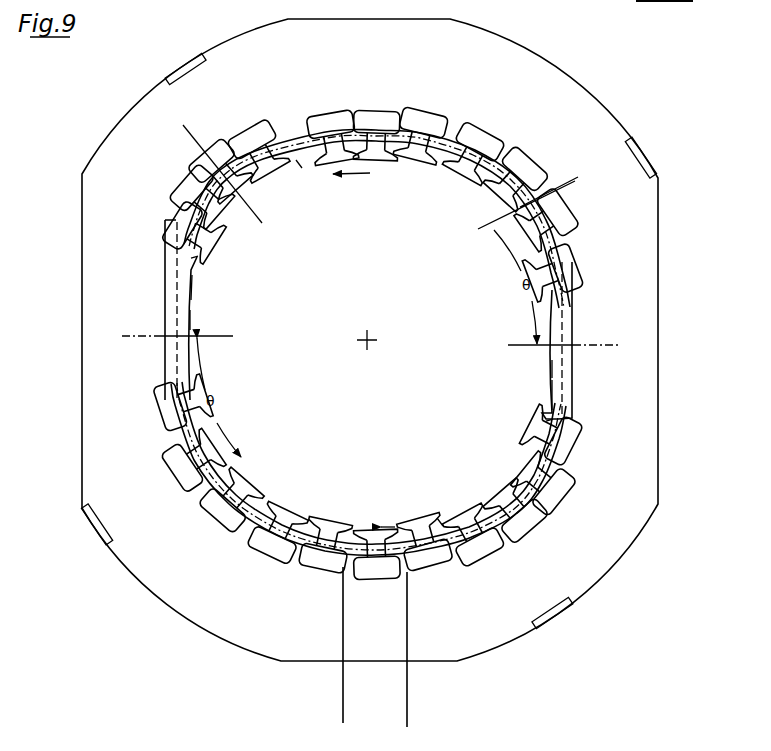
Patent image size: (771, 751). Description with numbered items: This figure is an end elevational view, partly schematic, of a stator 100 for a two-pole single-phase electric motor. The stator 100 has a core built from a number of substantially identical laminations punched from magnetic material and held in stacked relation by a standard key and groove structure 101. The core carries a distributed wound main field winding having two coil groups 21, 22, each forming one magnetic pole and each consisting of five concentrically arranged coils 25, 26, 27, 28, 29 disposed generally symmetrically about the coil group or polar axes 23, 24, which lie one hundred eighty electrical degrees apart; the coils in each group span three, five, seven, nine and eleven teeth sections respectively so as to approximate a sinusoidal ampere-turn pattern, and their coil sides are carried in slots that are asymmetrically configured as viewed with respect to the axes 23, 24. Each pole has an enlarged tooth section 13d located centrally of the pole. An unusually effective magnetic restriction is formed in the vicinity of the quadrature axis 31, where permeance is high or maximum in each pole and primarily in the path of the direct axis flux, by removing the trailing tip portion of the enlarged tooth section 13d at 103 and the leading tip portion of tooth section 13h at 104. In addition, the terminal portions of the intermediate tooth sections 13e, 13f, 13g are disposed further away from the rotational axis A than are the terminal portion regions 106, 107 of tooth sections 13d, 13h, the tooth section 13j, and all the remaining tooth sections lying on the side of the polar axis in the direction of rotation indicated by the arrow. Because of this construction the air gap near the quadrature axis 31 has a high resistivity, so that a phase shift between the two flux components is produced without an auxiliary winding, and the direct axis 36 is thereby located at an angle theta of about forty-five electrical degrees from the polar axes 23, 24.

The stator 100 is at (171, 613).
The key and groove structure 101 is at (179, 64).
The coil group 21 is at (163, 295).
The coil group 22 is at (576, 315).
The coil group axis 23 is at (140, 337).
The coil group axis 24 is at (606, 348).
The coil 25 is at (574, 268).
The coil 26 is at (567, 206).
The coil 27 is at (513, 167).
The coil 28 is at (468, 137).
The coil 29 is at (411, 126).
The enlarged tooth section 13d is at (196, 290).
The intermediate tooth section 13e is at (173, 217).
The intermediate tooth section 13f is at (185, 175).
The intermediate tooth section 13g is at (214, 158).
The tooth section 13h is at (282, 127).
The tooth section 13j is at (365, 124).
The quadrature axis 31 is at (247, 197).
The direct axis 36 is at (490, 226).
The removed trailing tip portion 103 is at (197, 262).
The removed leading tip portion 104 is at (298, 164).
The terminal portion region 106 is at (188, 318).
The terminal portion region 107 is at (323, 163).
The rotational axis A is at (373, 335).